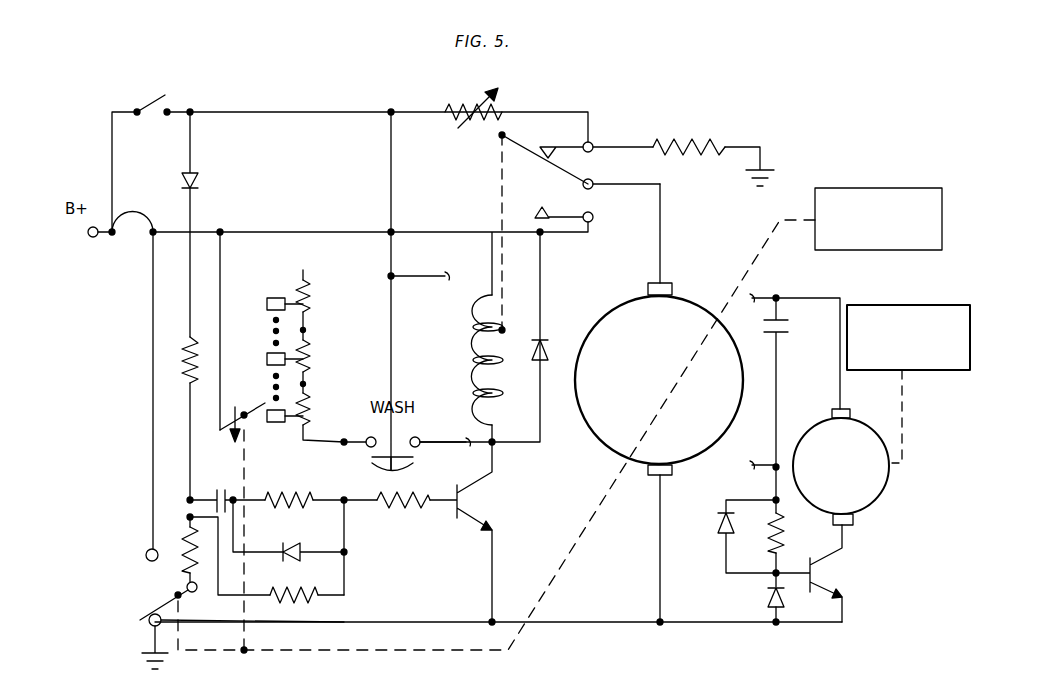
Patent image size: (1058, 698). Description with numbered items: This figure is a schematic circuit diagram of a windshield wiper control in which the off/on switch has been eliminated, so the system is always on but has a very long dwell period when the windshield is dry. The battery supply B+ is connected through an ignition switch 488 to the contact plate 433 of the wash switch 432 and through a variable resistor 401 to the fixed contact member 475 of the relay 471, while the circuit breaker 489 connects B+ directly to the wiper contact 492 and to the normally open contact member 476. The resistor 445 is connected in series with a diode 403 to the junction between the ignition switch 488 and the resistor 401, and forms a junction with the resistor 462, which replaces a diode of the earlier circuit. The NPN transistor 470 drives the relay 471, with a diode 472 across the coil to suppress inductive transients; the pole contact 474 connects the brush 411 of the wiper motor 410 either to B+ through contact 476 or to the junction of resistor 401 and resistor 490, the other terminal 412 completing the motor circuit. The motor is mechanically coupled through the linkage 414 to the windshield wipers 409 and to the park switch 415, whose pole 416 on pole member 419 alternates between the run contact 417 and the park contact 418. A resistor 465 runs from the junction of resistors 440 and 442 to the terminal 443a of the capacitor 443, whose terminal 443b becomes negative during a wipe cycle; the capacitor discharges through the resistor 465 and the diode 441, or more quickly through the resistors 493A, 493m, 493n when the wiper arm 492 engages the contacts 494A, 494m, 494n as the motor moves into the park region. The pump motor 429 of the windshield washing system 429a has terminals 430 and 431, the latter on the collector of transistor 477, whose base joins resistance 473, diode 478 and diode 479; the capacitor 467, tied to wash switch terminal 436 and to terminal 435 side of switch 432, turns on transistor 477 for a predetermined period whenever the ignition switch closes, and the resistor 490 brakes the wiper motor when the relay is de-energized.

The variable resistor 401 is at (453, 102).
The diode 403 is at (185, 175).
The windshield wipers 409 is at (868, 188).
The wiper motor 410 is at (603, 440).
The brush of the wiper motor 411 is at (674, 290).
The terminal of the wiper motor 412 is at (676, 472).
The mechanical coupling of the wiper motor 414 is at (556, 572).
The park switch 415 is at (153, 597).
The pole contact 416 is at (178, 598).
The run contact 417 is at (147, 550).
The park contact 418 is at (149, 626).
The pole member of the park switch 419 is at (198, 592).
The pump motor 429 is at (888, 478).
The windshield washing system 429a is at (880, 305).
The terminal of the pump motor 430 is at (850, 410).
The terminal of the pump motor 431 is at (855, 520).
The wash switch 432 is at (398, 482).
The contact plate of the wash switch 433 is at (376, 462).
The terminal of the wash switch 435 is at (366, 438).
The terminal of the wash switch 436 is at (416, 438).
The resistor 440 is at (280, 493).
The diode 441 is at (298, 560).
The resistor 442 is at (400, 508).
The capacitor 443 is at (225, 488).
The terminal of the capacitor 443a is at (217, 490).
The terminal of the capacitor 443b is at (250, 504).
The resistor 445 is at (185, 345).
The resistor 462 is at (186, 530).
The resistor 465 is at (322, 598).
The capacitor 467 is at (786, 336).
The NPN transistor 470 is at (478, 501).
The relay 471 is at (474, 330).
The diode 472 is at (546, 336).
The resistance 473 is at (784, 536).
The pole contact of the relay 474 is at (550, 174).
The normally closed throw contact member 475 is at (554, 142).
The normally open throw contact member 476 is at (584, 212).
The NPN bipolar transistor 477 is at (832, 577).
The diode 478 is at (718, 528).
The diode 479 is at (766, 600).
The ignition switch 488 is at (145, 103).
The circuit breaker 489 is at (125, 216).
The resistor 490 is at (645, 130).
The wiper contact 492 is at (257, 410).
The resistor 493n is at (305, 294).
The resistor 493m is at (305, 352).
The resistor 493A is at (305, 406).
The contact 494n is at (276, 298).
The contact 494m is at (270, 353).
The contact 494A is at (268, 410).